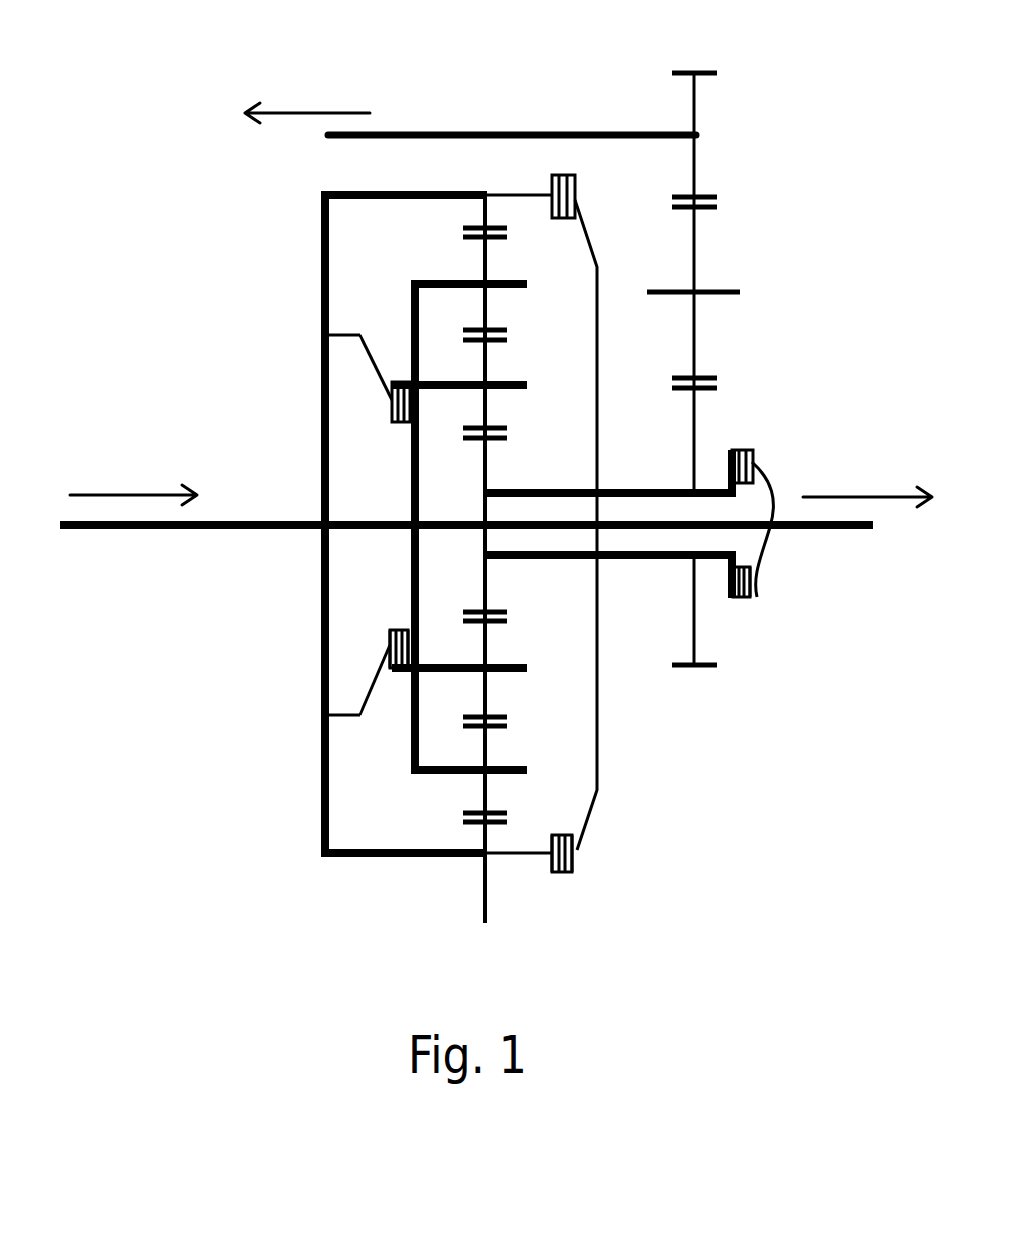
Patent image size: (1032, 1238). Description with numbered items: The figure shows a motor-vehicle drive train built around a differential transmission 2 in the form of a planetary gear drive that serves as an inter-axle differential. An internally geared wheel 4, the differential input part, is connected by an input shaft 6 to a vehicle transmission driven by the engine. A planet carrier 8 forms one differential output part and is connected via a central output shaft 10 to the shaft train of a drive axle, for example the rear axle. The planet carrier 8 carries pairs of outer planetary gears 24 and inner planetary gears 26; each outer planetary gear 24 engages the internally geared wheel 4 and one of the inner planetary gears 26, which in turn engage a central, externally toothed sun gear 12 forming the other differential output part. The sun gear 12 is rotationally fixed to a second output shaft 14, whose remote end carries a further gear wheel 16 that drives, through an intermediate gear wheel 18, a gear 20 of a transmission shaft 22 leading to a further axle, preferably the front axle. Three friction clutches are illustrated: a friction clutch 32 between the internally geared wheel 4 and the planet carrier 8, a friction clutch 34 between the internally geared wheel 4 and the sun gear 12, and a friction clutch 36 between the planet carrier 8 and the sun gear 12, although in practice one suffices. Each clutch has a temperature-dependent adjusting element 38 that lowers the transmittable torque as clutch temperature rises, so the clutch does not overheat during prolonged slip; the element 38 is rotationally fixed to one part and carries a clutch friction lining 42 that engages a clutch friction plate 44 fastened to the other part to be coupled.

The differential transmission 2 is at (290, 887).
The internally geared wheel 4 is at (485, 855).
The input shaft 6 is at (250, 520).
The planet carrier 8 is at (412, 539).
The output shaft 10 is at (830, 532).
The sun gear 12 is at (490, 585).
The second output shaft 14 is at (642, 562).
The further gear wheel 16 is at (697, 627).
The intermediate gear wheel 18 is at (697, 250).
The gear 20 is at (697, 92).
The transmission shaft 22 is at (477, 130).
The outer planetary gears 24 is at (487, 745).
The inner planetary gears 26 is at (487, 695).
The friction clutch 32 is at (390, 632).
The friction clutch 34 is at (573, 848).
The friction clutch 36 is at (757, 478).
The temperature-dependent adjusting element 38 is at (760, 480).
The clutch friction lining 42 is at (750, 597).
The clutch friction plate 44 is at (735, 602).